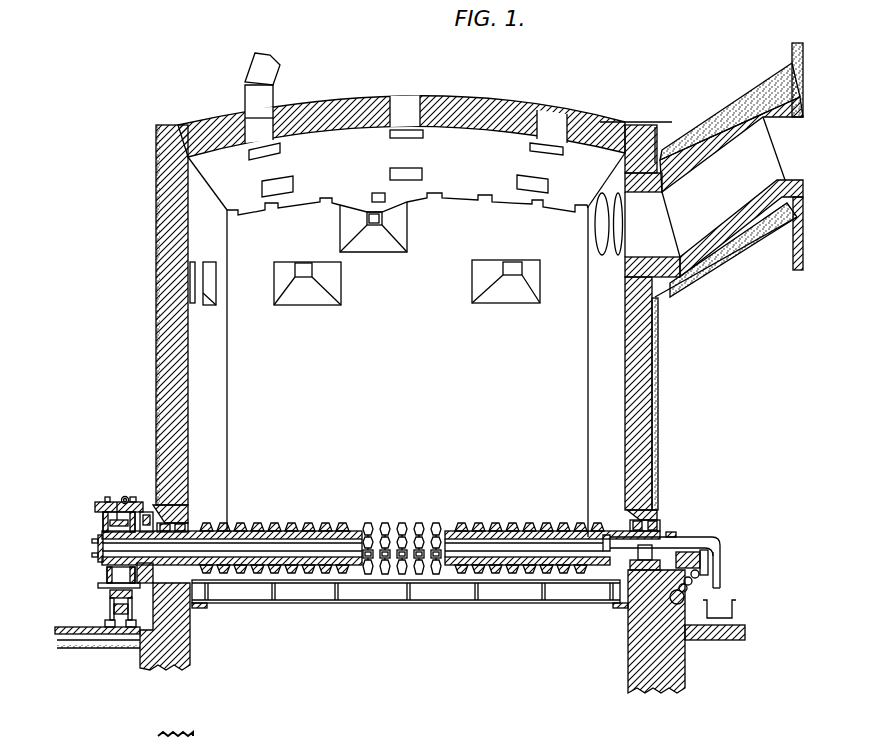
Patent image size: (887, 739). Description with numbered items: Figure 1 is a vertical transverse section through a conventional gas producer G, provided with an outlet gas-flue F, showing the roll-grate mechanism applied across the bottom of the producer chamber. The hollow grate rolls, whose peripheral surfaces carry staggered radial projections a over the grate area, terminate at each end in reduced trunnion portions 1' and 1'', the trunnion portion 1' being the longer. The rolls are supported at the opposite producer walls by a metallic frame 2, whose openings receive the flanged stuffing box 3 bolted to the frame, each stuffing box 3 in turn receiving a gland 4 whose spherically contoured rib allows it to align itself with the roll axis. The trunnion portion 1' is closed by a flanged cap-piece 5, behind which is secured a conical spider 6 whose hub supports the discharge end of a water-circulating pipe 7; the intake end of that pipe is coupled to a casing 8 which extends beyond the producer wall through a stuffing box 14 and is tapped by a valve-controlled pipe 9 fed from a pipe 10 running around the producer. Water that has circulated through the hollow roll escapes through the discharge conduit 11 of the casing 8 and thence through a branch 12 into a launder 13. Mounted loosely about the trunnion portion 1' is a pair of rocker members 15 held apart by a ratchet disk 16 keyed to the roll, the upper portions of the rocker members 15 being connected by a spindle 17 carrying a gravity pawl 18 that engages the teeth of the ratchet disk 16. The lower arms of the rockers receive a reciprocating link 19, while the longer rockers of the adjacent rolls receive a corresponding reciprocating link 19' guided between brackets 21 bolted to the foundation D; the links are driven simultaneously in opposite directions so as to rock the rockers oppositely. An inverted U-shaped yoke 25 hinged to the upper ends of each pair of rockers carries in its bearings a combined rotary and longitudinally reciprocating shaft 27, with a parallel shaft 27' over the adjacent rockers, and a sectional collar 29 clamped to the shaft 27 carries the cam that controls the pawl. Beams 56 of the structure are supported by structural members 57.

The trunnion portion 1' is at (146, 522).
The trunnion portion 1'' is at (682, 566).
The metallic frame 2 is at (170, 512).
The stuffing box 3 is at (190, 528).
The gland 4 is at (700, 524).
The cap-piece 5 is at (100, 553).
The conical spider 6 is at (100, 546).
The water-circulating pipe 7 is at (256, 523).
The casing 8 is at (606, 550).
The valve-controlled pipe 9 is at (708, 560).
The pipe 10 is at (684, 599).
The discharge conduit 11 is at (700, 541).
The branch 12 is at (722, 570).
The launder 13 is at (733, 608).
The stuffing box 14 is at (676, 535).
The rocker member 15 is at (103, 522).
The ratchet disk 16 is at (107, 572).
The spindle 17 is at (103, 515).
The gravity pawl 18 is at (117, 502).
The reciprocating link 19 is at (103, 599).
The reciprocating link 19' is at (100, 611).
The bracket 21 is at (130, 627).
The inverted U-shaped yoke 25 is at (108, 504).
The combined rotary and longitudinally reciprocating shaft 27 is at (140, 472).
The combined rotary and longitudinally reciprocating shaft 27' is at (103, 482).
The sectional collar 29 is at (126, 496).
The beam 56 is at (374, 605).
The structural member 57 is at (196, 610).
The radial projections a is at (419, 533).
The foundation D is at (72, 636).
The outlet gas-flue F is at (723, 255).
The gas producer G is at (640, 367).